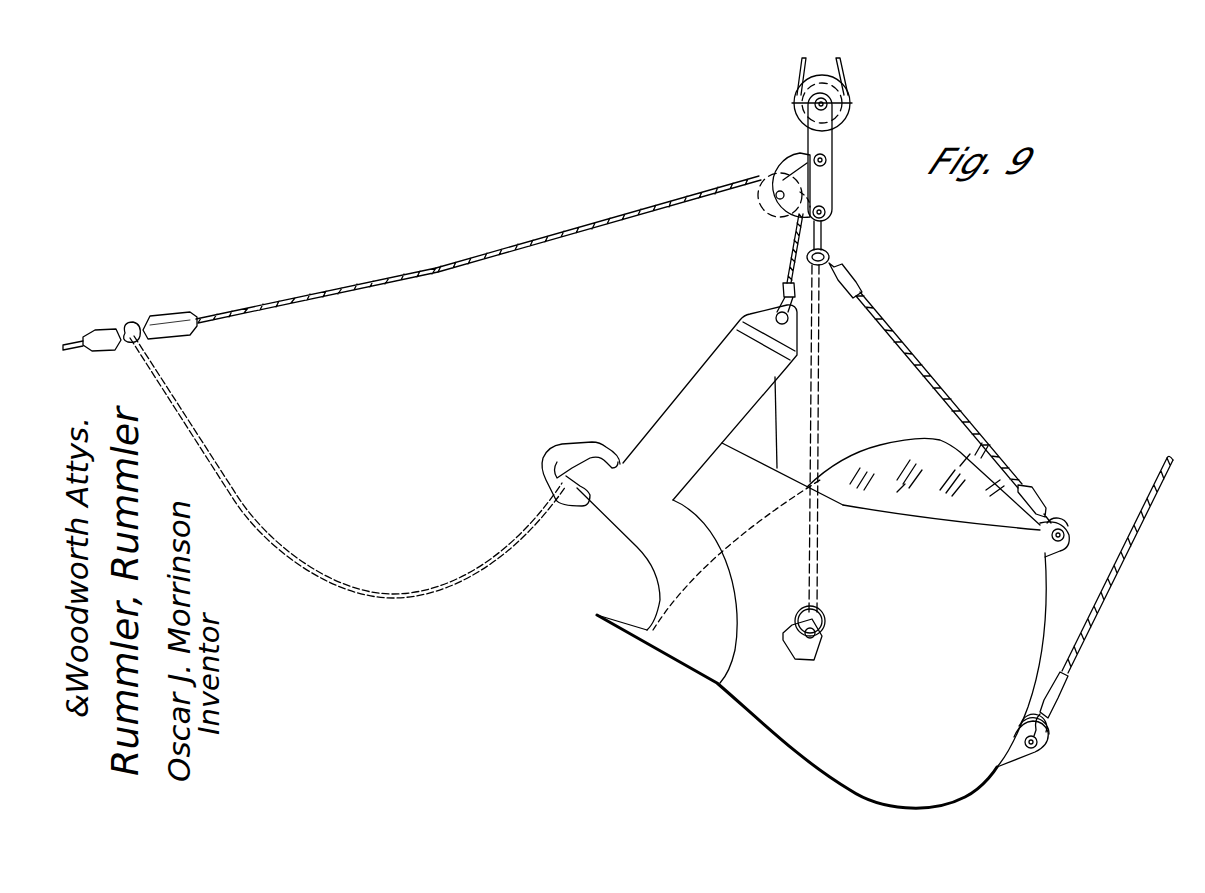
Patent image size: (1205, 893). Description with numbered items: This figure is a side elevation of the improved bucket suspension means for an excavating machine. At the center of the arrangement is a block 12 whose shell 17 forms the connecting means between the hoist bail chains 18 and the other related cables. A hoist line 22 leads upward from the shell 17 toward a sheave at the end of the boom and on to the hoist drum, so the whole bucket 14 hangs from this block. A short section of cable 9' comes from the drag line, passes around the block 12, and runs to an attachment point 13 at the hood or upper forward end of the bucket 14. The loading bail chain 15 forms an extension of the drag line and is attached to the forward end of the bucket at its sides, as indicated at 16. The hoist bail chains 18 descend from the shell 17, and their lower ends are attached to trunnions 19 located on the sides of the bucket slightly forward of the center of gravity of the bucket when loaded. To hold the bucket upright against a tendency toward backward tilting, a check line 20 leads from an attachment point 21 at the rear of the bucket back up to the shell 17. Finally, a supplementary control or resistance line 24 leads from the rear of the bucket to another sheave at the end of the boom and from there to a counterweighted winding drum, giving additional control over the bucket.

The short section of cable 9' is at (412, 263).
The block 12 is at (760, 172).
The attachment point 13 is at (778, 313).
The bucket 14 is at (762, 694).
The loading bail chain 15 is at (240, 496).
The attachment of loading bail chain 16 is at (548, 468).
The shell 17 is at (824, 186).
The hoist bail chains 18 is at (822, 350).
The trunnions 19 is at (815, 635).
The check line 20 is at (895, 335).
The attachment point 21 is at (1063, 526).
The hoist line 22 is at (848, 80).
The supplementary control or resistance line 24 is at (1148, 498).